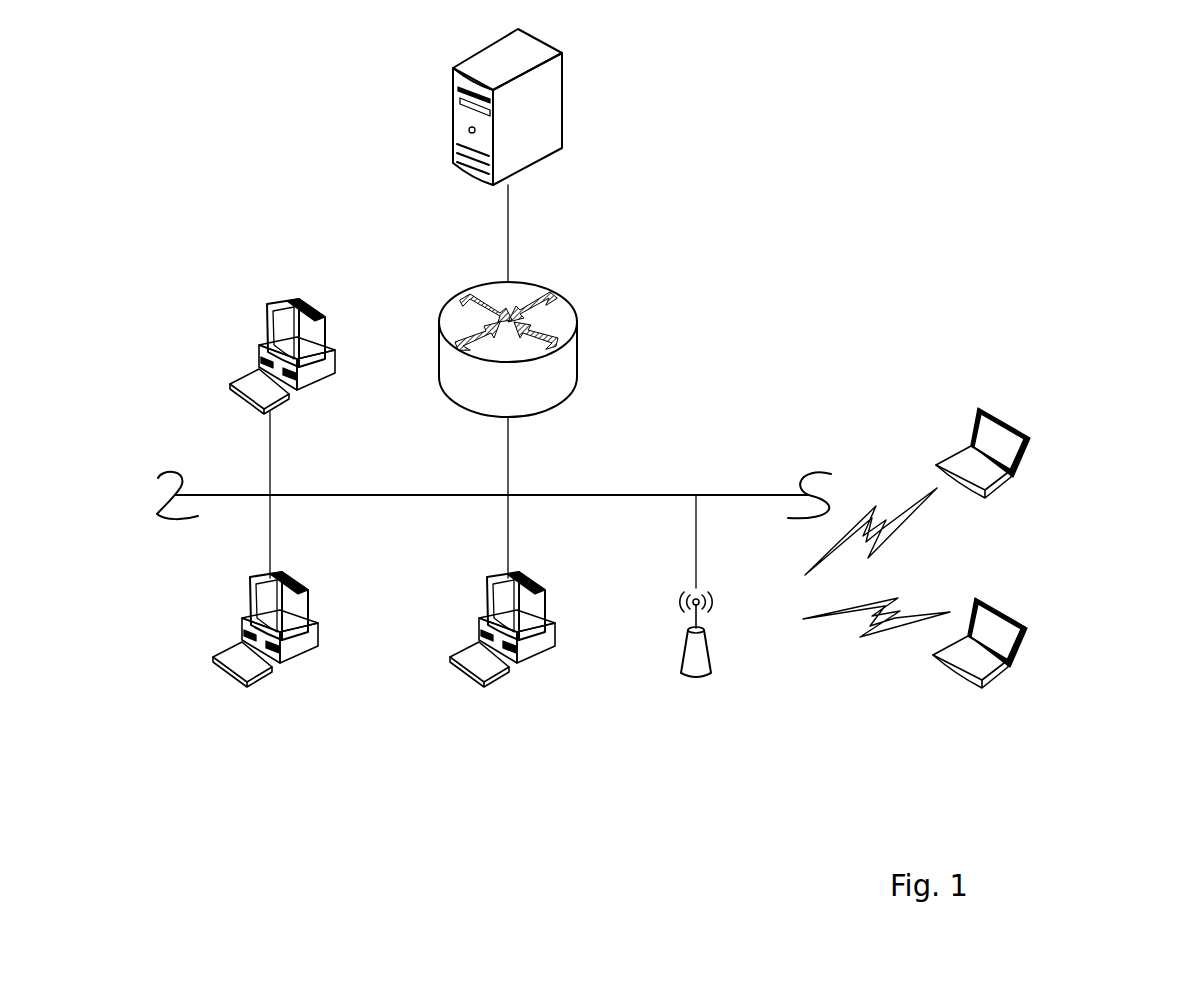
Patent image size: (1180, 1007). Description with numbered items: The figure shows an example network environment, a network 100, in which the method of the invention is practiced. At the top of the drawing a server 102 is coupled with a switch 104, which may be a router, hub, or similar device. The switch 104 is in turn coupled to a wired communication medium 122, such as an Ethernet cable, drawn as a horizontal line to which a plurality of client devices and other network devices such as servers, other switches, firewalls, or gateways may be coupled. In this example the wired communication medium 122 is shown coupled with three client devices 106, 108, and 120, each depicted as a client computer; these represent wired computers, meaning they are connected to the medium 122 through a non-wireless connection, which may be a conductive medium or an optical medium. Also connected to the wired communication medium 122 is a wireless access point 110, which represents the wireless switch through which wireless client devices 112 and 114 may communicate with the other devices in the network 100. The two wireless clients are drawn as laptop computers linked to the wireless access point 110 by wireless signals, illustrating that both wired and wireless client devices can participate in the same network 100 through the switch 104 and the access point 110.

The network 100 is at (803, 154).
The server 102 is at (563, 107).
The switch 104 is at (578, 342).
The client device 106 is at (308, 610).
The client device 108 is at (518, 617).
The wireless access point 110 is at (709, 642).
The wireless client device 112 is at (1003, 610).
The wireless client device 114 is at (1045, 432).
The client device 120 is at (299, 365).
The wired communication medium 122 is at (575, 495).